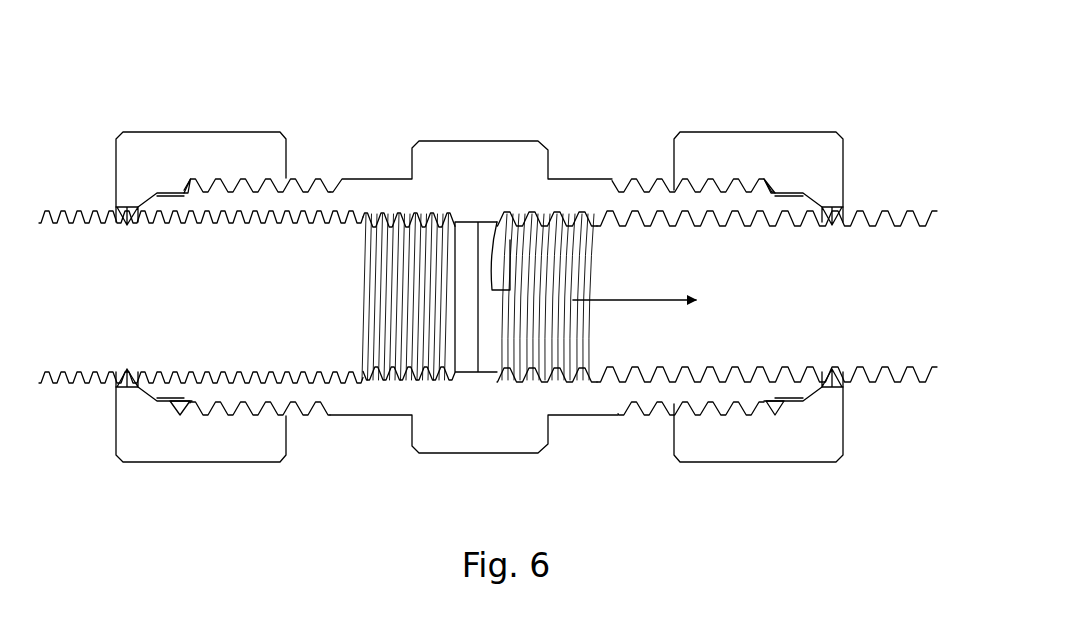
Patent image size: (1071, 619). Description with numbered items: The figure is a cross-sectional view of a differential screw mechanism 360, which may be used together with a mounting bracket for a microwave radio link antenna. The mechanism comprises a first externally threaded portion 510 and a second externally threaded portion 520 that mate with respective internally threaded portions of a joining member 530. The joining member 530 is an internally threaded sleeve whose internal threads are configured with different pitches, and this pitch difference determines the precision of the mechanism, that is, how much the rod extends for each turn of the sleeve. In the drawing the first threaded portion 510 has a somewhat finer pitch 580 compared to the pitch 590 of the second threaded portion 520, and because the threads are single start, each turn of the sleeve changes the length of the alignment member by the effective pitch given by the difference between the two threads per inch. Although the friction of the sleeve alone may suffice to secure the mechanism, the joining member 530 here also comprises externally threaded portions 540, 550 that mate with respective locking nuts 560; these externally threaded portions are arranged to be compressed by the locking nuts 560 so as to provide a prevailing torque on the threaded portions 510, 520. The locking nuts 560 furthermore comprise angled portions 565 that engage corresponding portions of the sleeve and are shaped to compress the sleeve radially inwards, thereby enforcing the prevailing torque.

The differential screw mechanism 360 is at (846, 65).
The first externally threaded portion 510 is at (142, 307).
The second externally threaded portion 520 is at (881, 307).
The joining member 530 is at (503, 190).
The externally threaded portion of the joining member 540 is at (313, 170).
The externally threaded portion of the joining member 550 is at (651, 178).
The locking nut 560 is at (183, 148).
The angled portion 565 is at (134, 188).
The pitch of the first threaded portion 580 is at (403, 295).
The pitch of the second threaded portion 590 is at (562, 268).